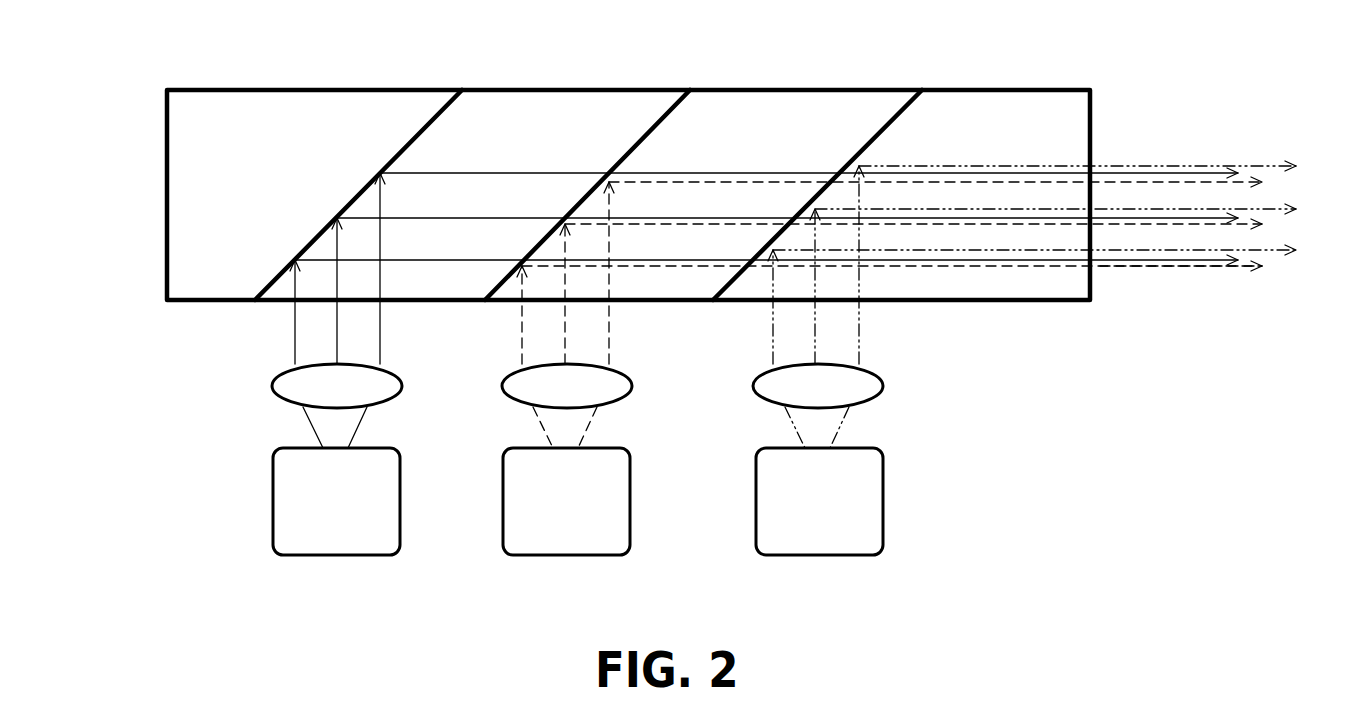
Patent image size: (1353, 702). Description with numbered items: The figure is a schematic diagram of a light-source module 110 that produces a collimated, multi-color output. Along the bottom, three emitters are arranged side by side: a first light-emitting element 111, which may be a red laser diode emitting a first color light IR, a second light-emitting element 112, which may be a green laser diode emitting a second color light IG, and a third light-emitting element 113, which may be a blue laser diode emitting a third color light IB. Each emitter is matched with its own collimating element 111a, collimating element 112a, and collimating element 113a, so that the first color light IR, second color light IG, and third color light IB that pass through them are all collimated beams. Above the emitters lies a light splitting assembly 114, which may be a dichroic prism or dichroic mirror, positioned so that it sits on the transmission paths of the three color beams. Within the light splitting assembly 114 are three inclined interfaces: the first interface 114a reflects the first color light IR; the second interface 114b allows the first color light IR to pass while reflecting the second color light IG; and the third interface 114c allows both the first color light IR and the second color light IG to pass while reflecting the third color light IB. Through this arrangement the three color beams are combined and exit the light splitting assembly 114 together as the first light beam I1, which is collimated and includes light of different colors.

The light-source module 110 is at (731, 322).
The first light-emitting element 111 is at (333, 556).
The collimating element 111a is at (273, 387).
The second light-emitting element 112 is at (568, 556).
The collimating element 112a is at (503, 387).
The third light-emitting element 113 is at (819, 556).
The collimating element 113a is at (754, 387).
The light splitting assembly 114 is at (535, 89).
The first interface 114a is at (421, 128).
The second interface 114b is at (652, 128).
The third interface 114c is at (884, 128).
The first color light IR is at (293, 336).
The second color light IG is at (520, 336).
The third color light IB is at (771, 336).
The first light beam I1 is at (1192, 268).